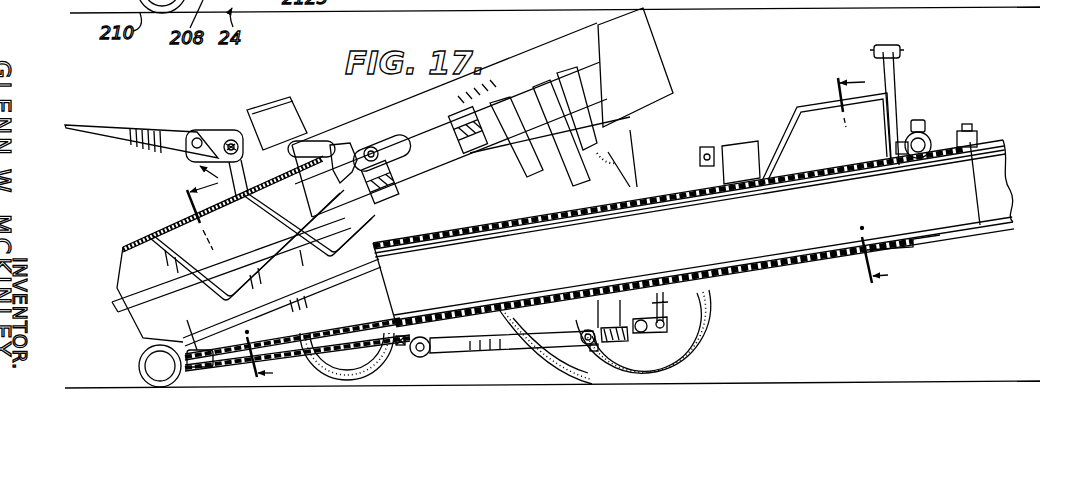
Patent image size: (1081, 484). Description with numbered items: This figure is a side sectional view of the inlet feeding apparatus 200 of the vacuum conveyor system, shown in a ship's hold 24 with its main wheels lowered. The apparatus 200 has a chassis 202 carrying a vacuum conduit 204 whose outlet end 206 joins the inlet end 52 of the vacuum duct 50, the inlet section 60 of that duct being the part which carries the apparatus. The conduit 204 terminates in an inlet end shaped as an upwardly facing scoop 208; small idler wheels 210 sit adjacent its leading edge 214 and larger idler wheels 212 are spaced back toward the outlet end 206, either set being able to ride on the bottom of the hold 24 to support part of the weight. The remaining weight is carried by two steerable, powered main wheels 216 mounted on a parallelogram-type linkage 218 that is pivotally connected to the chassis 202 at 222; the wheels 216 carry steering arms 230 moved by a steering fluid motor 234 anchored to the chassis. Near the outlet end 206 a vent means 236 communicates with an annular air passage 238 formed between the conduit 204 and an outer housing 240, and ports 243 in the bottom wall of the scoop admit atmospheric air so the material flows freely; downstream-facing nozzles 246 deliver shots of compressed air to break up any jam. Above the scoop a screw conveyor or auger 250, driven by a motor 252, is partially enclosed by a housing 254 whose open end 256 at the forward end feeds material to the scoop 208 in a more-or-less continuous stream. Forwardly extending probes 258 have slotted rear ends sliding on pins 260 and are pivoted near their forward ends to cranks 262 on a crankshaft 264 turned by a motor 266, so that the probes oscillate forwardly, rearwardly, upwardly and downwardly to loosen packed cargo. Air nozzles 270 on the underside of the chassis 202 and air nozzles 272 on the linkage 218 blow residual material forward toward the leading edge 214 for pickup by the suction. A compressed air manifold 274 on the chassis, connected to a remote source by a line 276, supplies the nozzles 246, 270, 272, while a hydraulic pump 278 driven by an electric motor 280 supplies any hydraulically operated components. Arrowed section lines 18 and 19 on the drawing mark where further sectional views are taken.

The section line 18- 18 is at (226, 275).
The section line 19- 19 is at (865, 180).
The hold 24 is at (432, 370).
The duct 50 is at (1002, 140).
The inlet end 52 is at (973, 140).
The inlet section 60 is at (1012, 196).
The apparatus 200 is at (947, 270).
The chassis 202 is at (774, 268).
The vacuum conduit 204 is at (738, 270).
The outlet end 206 is at (965, 133).
The scoop 208 is at (152, 360).
The idler wheels 210 is at (185, 382).
The idler wheels 212 is at (350, 381).
The leading edge 214 is at (142, 380).
The main wheels 216 is at (690, 347).
The parallelogram-type linkage 218 is at (512, 350).
The pivotal connection 222 is at (428, 352).
The steering arms 230 is at (660, 306).
The steering fluid motor 234 is at (636, 381).
The vent means 236 is at (806, 105).
The annular air passage 238 is at (818, 262).
The outer housing 240 is at (906, 252).
The ports 243 is at (205, 378).
The nozzles 246 is at (342, 345).
The auger 250 is at (150, 237).
The motor 252 is at (640, 134).
The housing 254 is at (343, 146).
The open end 256 is at (120, 278).
The probes 258 is at (152, 131).
The pins 260 is at (372, 148).
The cranks 262 is at (207, 132).
The crankshaft 264 is at (234, 140).
The motor 266 is at (294, 114).
The air nozzles 270 is at (400, 346).
The air nozzles 272 is at (568, 378).
The compressed air manifold 274 is at (920, 121).
The line 276 is at (898, 75).
The hydraulic pump 278 is at (707, 148).
The electric motor 280 is at (755, 145).